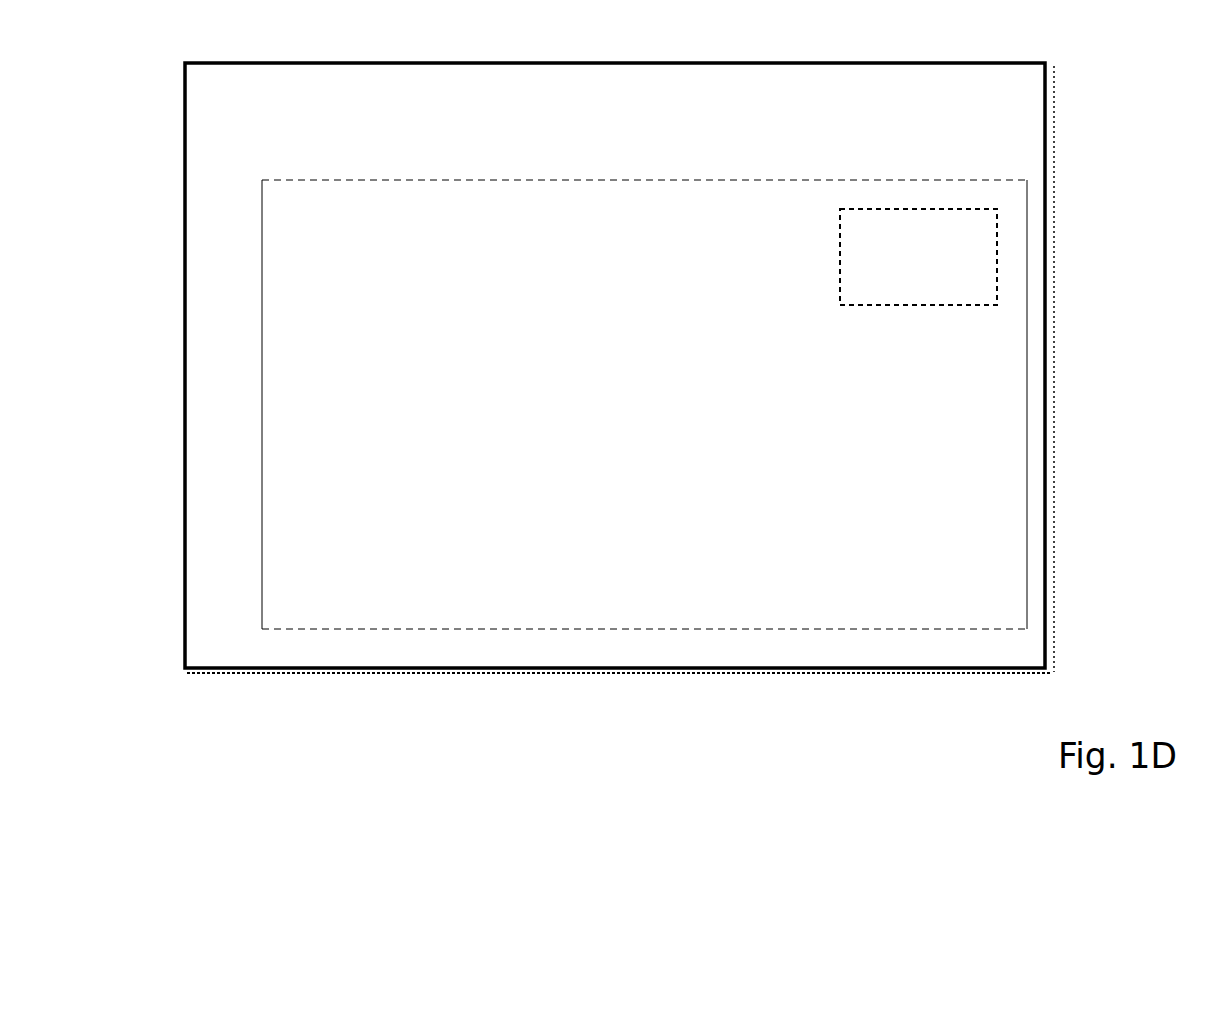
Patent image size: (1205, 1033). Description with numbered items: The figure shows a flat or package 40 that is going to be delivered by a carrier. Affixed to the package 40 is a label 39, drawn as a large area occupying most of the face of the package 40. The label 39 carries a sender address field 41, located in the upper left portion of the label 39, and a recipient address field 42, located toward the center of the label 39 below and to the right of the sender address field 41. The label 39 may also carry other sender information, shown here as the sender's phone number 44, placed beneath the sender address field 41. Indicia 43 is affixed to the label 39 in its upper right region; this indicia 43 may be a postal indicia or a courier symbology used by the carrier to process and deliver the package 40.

The label 39 is at (322, 180).
The package 40 is at (928, 62).
The sender address field 41 is at (293, 205).
The recipient address field 42 is at (536, 472).
The indicia 43 is at (841, 268).
The sender's phone number 44 is at (390, 326).